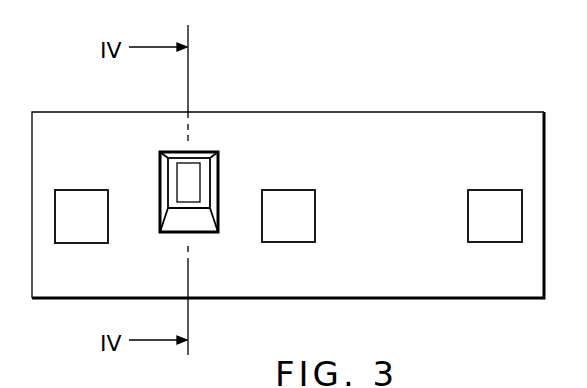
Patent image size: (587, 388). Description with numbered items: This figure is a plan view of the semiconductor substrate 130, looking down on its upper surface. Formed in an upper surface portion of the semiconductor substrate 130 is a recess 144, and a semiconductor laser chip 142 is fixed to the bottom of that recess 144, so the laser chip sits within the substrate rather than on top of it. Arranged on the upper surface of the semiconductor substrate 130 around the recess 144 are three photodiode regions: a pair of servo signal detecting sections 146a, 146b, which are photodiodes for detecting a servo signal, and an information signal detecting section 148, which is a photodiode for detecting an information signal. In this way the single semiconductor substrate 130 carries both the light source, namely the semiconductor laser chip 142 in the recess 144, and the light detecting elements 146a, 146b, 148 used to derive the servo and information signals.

The semiconductor substrate 130 is at (403, 112).
The semiconductor laser chip 142 is at (190, 172).
The recess 144 is at (199, 222).
The servo signal detecting section 146a is at (80, 198).
The servo signal detecting section 146b is at (286, 198).
The information signal detecting section 148 is at (493, 198).